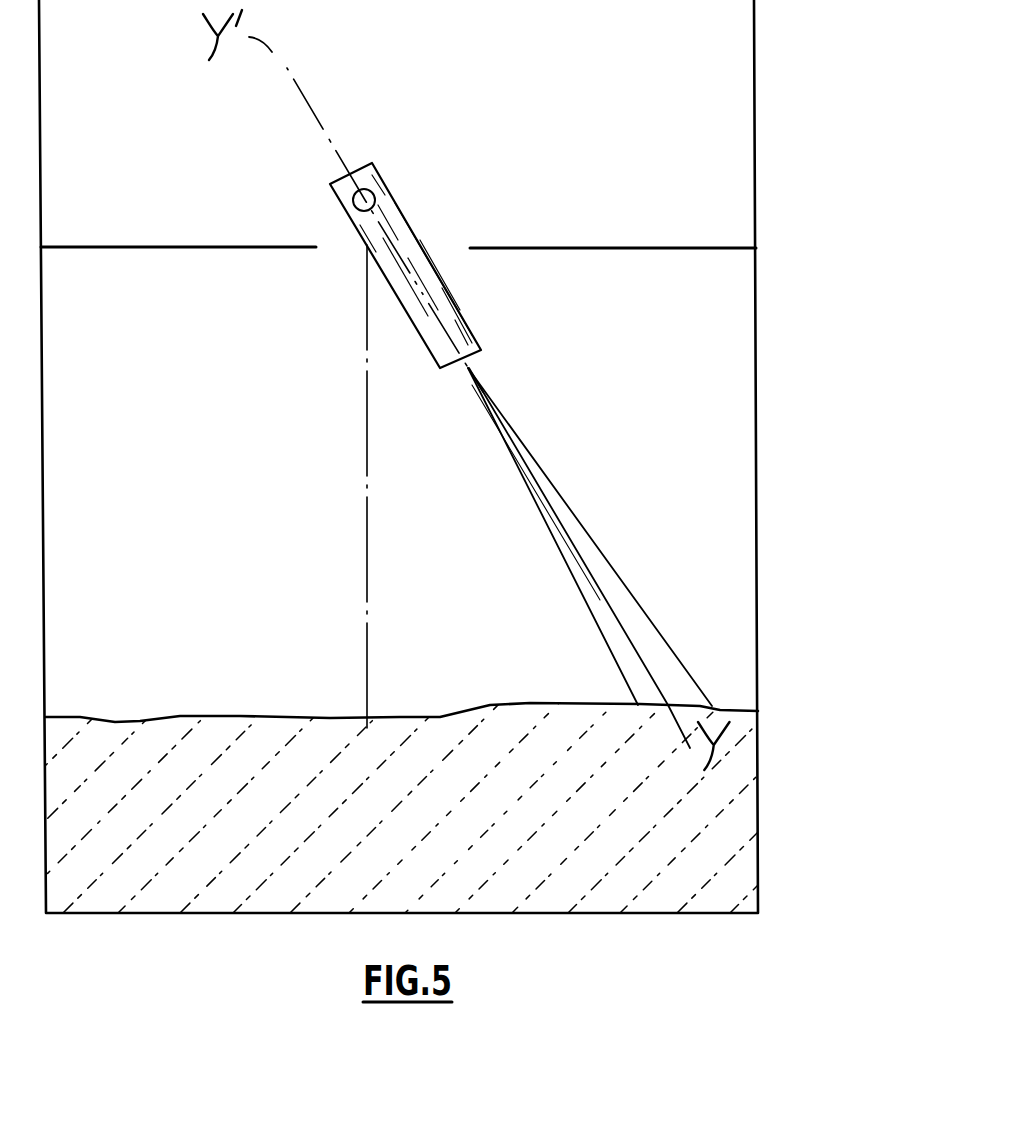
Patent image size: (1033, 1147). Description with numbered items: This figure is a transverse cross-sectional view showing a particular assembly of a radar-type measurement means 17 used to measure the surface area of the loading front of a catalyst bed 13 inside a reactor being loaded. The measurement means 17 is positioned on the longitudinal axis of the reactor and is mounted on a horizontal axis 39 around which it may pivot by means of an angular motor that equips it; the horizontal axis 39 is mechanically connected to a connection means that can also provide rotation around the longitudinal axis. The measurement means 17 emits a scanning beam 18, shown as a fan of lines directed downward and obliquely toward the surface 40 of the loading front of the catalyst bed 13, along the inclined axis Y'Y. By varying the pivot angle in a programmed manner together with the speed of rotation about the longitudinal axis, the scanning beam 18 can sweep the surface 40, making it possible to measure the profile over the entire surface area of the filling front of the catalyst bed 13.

The catalyst bed 13 is at (647, 822).
The radar-type measurement means 17 is at (407, 222).
The scanning beam 18 is at (603, 560).
The horizontal axis 39 is at (352, 199).
The surface of the loading front 40 is at (155, 718).